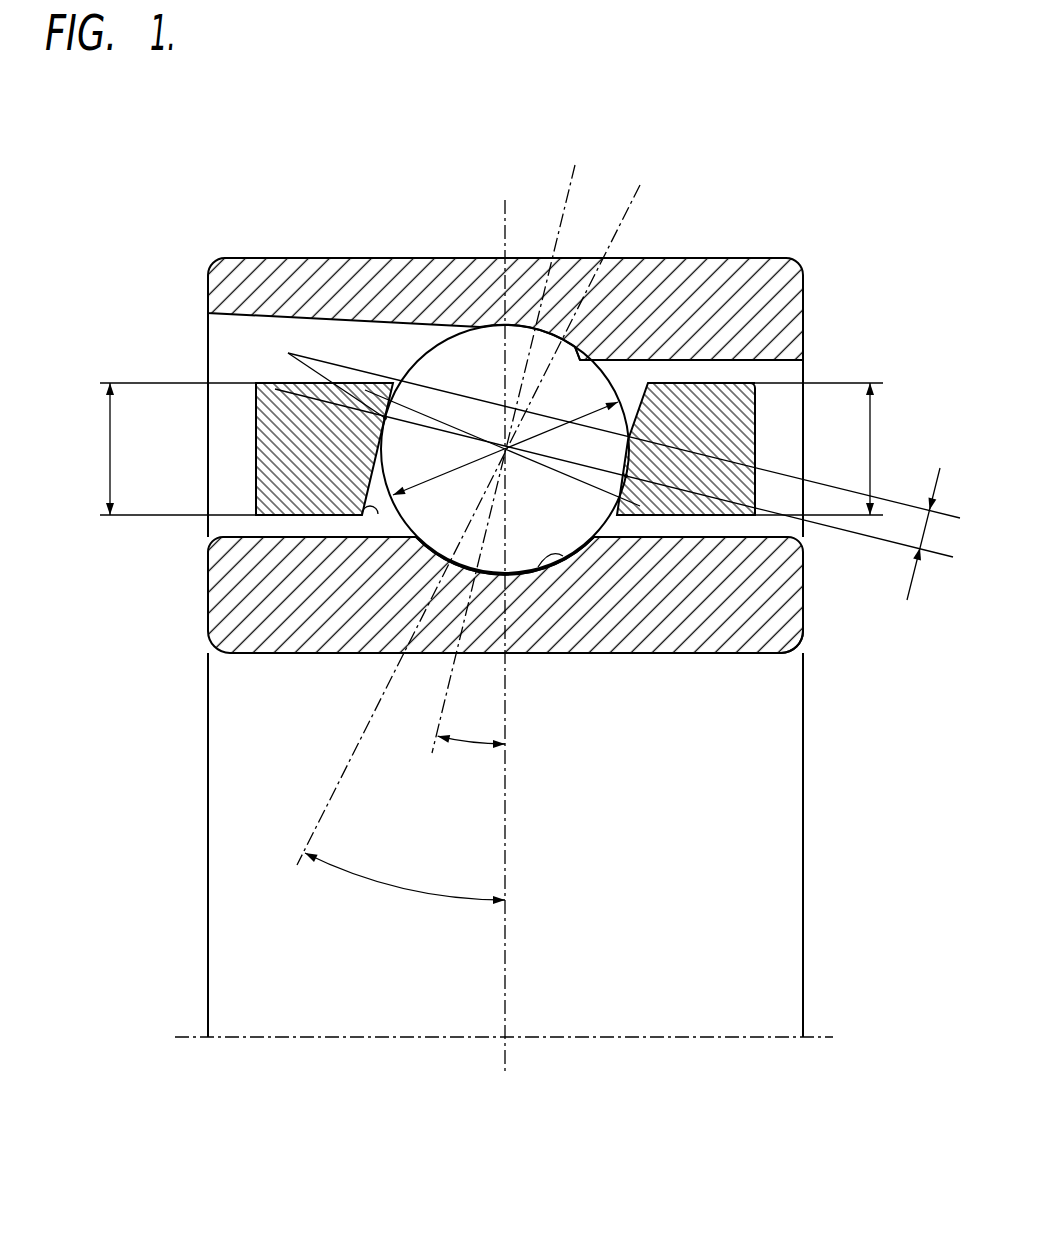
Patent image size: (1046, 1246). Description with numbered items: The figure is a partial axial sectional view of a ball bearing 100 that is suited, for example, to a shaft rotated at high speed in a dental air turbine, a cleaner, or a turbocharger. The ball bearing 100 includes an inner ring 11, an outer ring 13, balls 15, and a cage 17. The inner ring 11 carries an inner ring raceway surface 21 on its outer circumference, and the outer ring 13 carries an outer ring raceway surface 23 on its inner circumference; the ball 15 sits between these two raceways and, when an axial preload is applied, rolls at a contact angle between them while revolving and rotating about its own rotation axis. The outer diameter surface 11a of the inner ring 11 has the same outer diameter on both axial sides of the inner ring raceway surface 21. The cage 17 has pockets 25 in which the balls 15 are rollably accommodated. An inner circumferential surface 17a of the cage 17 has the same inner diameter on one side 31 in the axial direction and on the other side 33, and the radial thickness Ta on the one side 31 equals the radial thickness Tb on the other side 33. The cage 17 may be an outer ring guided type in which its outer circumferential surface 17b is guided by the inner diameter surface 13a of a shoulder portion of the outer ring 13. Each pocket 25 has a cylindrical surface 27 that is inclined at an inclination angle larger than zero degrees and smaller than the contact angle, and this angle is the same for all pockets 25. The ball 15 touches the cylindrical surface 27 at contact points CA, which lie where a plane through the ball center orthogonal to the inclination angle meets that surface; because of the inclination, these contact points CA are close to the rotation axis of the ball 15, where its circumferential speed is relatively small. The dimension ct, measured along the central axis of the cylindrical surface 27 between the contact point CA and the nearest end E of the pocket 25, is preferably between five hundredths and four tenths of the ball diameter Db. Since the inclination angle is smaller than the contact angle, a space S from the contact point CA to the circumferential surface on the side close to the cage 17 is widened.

The ball bearing 100 is at (232, 208).
The inner ring 11 is at (206, 624).
The outer diameter surface of the inner ring 11a is at (255, 518).
The outer ring 13 is at (206, 268).
The inner diameter surface of the shoulder portion of the outer ring 13a is at (805, 362).
The ball 15 is at (472, 342).
The cage 17 is at (276, 378).
The inner circumferential surface of the cage 17a is at (717, 540).
The outer circumferential surface of the cage 17b is at (780, 365).
The inner ring raceway surface 21 is at (680, 655).
The outer ring raceway surface 23 is at (638, 390).
The pocket 25 is at (704, 390).
The cylindrical surface of the pocket 27 is at (372, 513).
The one side in the axial direction of the cage 31 is at (275, 468).
The other side in the axial direction of the cage 33 is at (758, 452).
The contact point CA is at (327, 385).
The nearest end of the pocket E is at (387, 417).
The space S is at (391, 385).
The diameter of the ball Db is at (505, 448).
The thickness in the radial direction on the one side Ta is at (161, 449).
The thickness in the radial direction on the other side Tb is at (837, 449).
The dimension between the contact point and the nearest end of the pocket ct is at (918, 534).